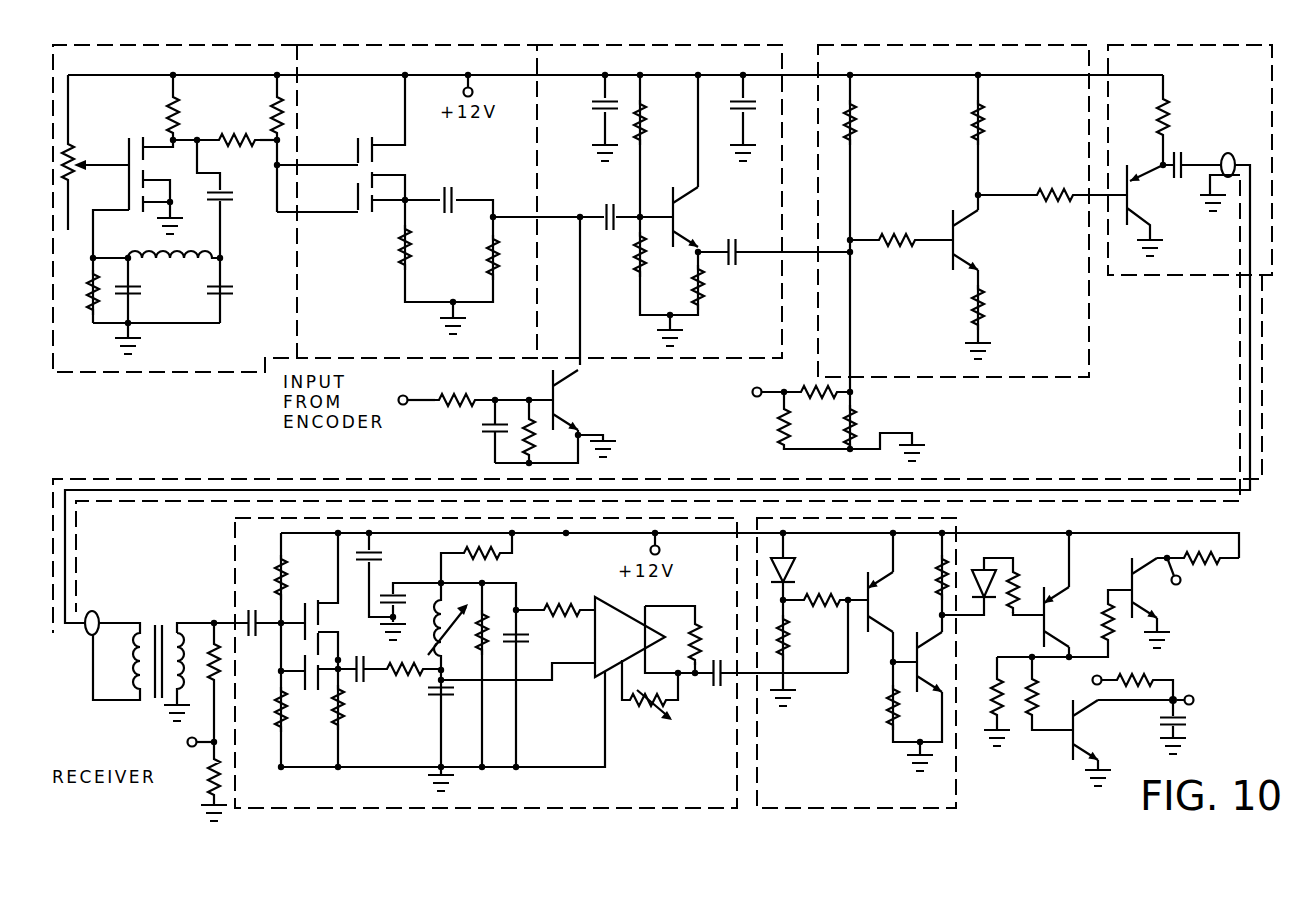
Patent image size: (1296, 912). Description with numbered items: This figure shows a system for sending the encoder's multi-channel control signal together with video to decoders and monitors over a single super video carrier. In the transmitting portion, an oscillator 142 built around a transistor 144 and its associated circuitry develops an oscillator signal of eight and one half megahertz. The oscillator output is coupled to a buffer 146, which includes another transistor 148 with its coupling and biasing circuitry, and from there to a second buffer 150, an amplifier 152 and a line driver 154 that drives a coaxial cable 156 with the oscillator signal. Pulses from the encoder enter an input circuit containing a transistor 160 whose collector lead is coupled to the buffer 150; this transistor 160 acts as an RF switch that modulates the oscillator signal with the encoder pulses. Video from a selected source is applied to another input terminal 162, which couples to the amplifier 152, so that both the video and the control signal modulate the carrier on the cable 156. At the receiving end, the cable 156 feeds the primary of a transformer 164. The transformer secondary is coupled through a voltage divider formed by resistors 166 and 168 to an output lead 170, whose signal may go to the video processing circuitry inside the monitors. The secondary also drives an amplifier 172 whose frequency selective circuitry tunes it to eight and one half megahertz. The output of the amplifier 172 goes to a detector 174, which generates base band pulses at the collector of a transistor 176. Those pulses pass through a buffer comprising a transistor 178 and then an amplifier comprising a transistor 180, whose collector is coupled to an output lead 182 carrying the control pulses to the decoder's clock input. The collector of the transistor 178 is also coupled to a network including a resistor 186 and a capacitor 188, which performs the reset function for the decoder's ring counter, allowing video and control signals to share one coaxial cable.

The oscillator 142 is at (76, 48).
The transistor 144 is at (128, 200).
The buffer 146 is at (527, 48).
The transistor 148 is at (356, 214).
The buffer 150 is at (597, 48).
The amplifier 152 is at (886, 48).
The line driver 154 is at (1272, 100).
The coaxial cable 156 is at (1240, 370).
The transistor 160 is at (562, 402).
The input terminal 162 is at (756, 397).
The transformer 164 is at (166, 622).
The resistor 166 is at (216, 666).
The resistor 168 is at (222, 780).
The output lead 170 is at (187, 742).
The amplifier 172 is at (234, 547).
The detector 174 is at (958, 524).
The transistor 176 is at (928, 664).
The transistor 178 is at (1048, 612).
The transistor 180 is at (1128, 580).
The output lead 182 is at (1177, 585).
The resistor 186 is at (1150, 669).
The capacitor 188 is at (1190, 705).